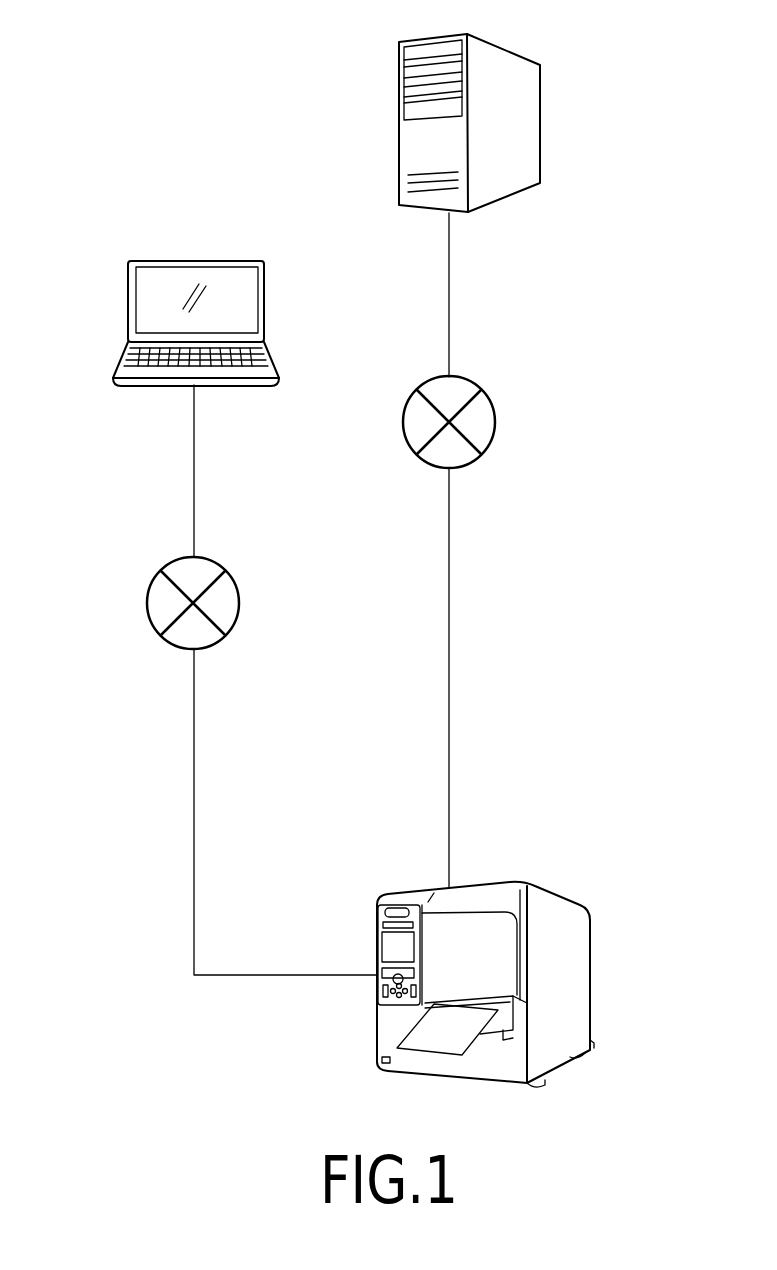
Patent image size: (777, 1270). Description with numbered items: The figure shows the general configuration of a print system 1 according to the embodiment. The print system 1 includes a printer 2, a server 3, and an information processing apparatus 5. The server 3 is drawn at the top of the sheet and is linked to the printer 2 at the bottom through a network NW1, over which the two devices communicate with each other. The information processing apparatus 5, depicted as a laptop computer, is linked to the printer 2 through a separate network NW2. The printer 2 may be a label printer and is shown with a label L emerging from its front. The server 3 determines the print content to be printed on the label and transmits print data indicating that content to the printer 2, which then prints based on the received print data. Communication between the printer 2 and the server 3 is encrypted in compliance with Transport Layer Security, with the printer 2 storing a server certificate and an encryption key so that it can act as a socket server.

The print system 1 is at (662, 58).
The printer 2 is at (578, 920).
The server 3 is at (486, 40).
The information processing apparatus 5 is at (120, 360).
The network NW1 is at (496, 420).
The network NW2 is at (239, 600).
The label L is at (443, 1050).